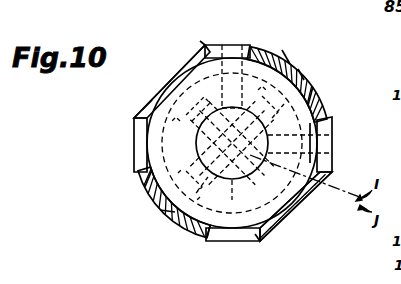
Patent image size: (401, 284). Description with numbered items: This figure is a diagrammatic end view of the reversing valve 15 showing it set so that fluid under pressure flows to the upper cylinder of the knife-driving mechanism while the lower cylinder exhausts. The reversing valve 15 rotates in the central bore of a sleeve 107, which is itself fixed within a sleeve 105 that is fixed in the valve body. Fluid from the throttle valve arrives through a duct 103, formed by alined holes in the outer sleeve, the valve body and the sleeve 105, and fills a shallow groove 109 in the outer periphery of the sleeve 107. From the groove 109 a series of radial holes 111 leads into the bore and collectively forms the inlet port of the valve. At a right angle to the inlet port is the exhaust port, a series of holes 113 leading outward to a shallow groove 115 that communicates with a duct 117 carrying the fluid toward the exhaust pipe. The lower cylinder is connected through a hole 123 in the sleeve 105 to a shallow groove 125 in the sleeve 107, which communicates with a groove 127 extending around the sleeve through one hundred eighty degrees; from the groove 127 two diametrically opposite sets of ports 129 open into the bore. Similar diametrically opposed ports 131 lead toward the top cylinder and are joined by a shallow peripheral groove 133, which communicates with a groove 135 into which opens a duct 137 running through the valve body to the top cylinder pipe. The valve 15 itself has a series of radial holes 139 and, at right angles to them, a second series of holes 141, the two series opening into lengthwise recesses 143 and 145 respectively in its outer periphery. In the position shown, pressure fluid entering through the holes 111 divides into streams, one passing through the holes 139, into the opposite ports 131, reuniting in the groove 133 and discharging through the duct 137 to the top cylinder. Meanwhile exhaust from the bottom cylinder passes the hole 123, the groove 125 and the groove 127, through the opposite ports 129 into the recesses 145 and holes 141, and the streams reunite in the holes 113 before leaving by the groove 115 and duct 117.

The reversing valve 15 is at (208, 153).
The duct 103 is at (205, 45).
The sleeve 105 is at (154, 98).
The sleeve 107 is at (318, 112).
The shallow groove 109 is at (255, 46).
The holes 111 is at (226, 45).
The holes 113 is at (332, 143).
The shallow groove 115 is at (335, 124).
The duct 117 is at (332, 173).
The hole 123 is at (256, 241).
The shallow groove 125 is at (246, 242).
The groove 127 is at (305, 210).
The ports 129 is at (298, 227).
The ports 131 is at (297, 73).
The shallow peripheral groove 133 is at (283, 58).
The groove 135 is at (147, 136).
The duct 137 is at (135, 166).
The holes 139 is at (241, 195).
The holes 141 is at (194, 108).
The recesses 143 is at (233, 148).
The recesses 145 is at (278, 124).